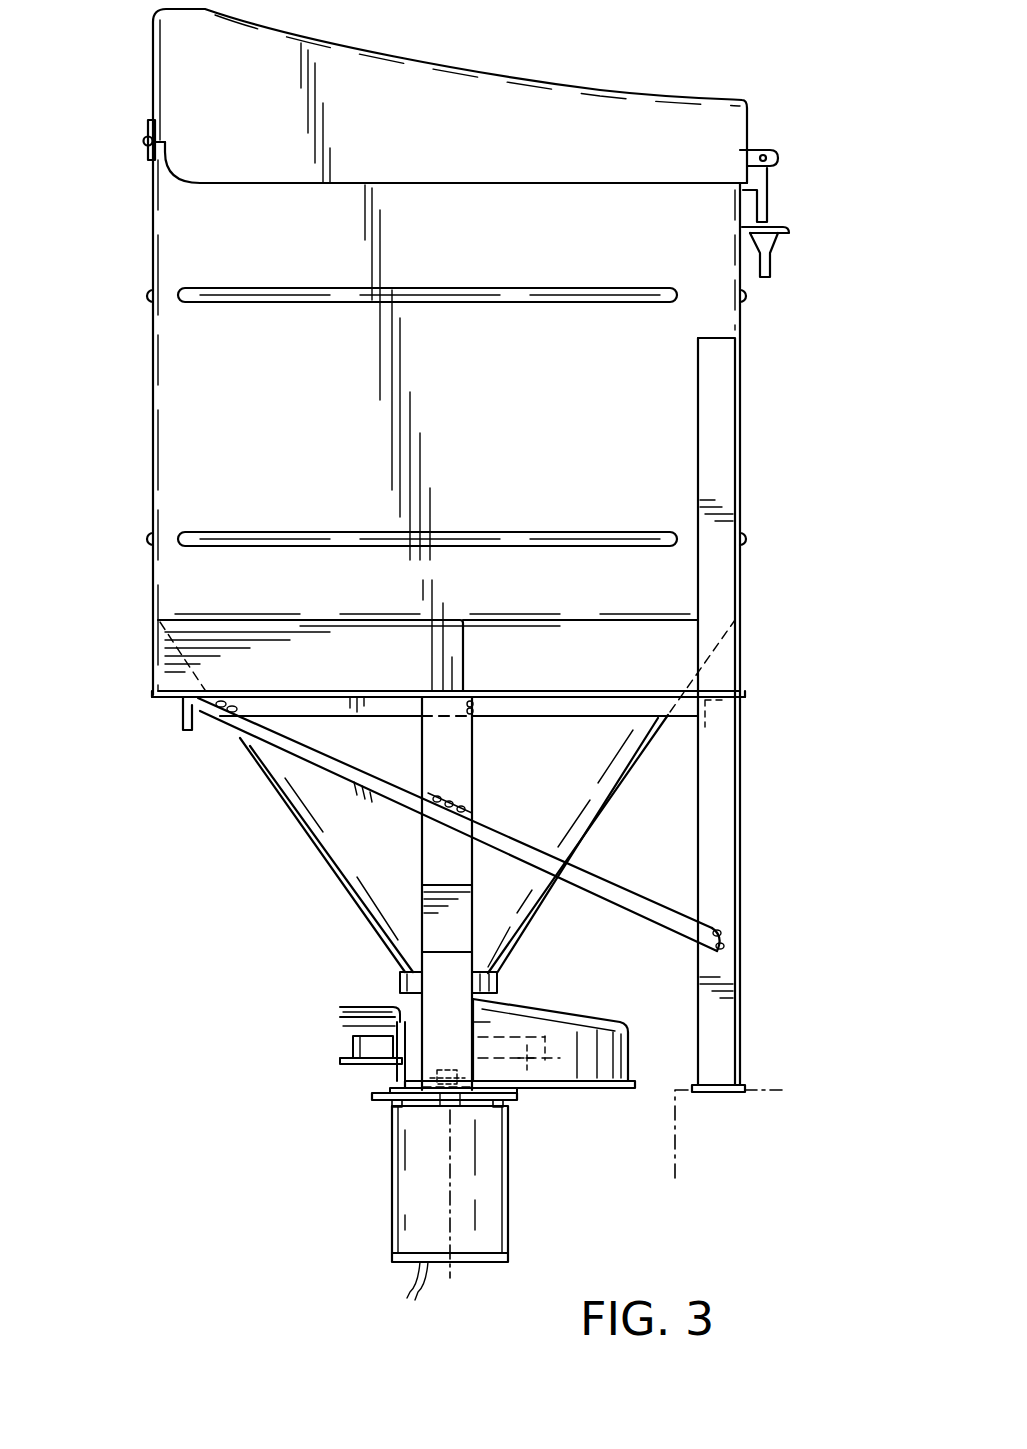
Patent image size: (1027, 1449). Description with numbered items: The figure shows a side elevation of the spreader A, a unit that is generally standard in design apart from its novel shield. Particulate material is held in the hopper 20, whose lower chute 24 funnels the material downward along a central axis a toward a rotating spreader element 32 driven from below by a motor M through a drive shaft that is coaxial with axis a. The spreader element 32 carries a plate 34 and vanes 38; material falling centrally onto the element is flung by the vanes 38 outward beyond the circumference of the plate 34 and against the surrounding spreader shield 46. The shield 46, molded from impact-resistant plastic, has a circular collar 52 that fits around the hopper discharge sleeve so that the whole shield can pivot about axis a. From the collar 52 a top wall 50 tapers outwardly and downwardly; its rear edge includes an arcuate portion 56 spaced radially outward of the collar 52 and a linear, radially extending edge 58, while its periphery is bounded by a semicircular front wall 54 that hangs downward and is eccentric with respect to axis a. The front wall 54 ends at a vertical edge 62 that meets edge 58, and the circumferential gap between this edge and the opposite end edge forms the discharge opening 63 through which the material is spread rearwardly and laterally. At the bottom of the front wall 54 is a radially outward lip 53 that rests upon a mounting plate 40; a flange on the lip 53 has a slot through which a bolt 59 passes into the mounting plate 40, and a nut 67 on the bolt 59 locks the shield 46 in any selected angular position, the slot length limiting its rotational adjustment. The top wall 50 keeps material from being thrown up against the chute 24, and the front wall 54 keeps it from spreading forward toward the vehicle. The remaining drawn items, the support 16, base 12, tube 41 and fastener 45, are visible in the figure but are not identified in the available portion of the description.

The spreader A is at (112, 70).
The hopper 20 is at (143, 343).
The support post 16 is at (760, 803).
The floor 12 is at (675, 1153).
The chute 24 is at (300, 830).
The dispensing tube 41 is at (437, 863).
The circular collar 52 is at (400, 982).
The arcuate portion 56 is at (343, 1005).
The radially extending edge 58 is at (345, 1013).
The discharge opening 63 is at (343, 1026).
The vanes 38 is at (352, 1041).
The spreader element 32 is at (326, 1070).
The plate 34 is at (358, 1062).
The top wall 50 is at (548, 1005).
The front wall 54 is at (632, 1057).
The spreader shield 46 is at (648, 1029).
The lip 53 is at (612, 1088).
The bolt 59 is at (445, 1073).
The mounting plate 40 is at (508, 1100).
The vertical edge 62 is at (392, 1073).
The bolt 45 is at (390, 1108).
The nut 67 is at (440, 1100).
The axis a is at (448, 1195).
The motor M is at (415, 1225).